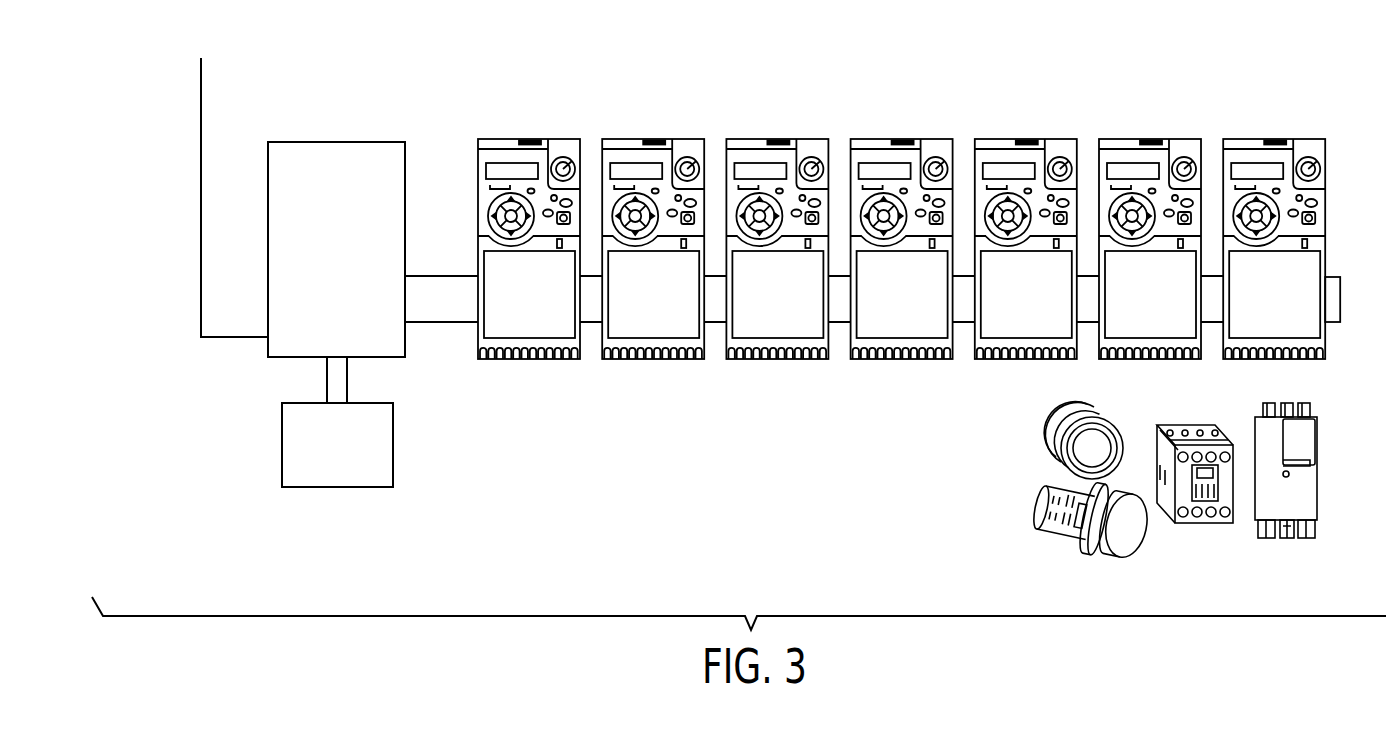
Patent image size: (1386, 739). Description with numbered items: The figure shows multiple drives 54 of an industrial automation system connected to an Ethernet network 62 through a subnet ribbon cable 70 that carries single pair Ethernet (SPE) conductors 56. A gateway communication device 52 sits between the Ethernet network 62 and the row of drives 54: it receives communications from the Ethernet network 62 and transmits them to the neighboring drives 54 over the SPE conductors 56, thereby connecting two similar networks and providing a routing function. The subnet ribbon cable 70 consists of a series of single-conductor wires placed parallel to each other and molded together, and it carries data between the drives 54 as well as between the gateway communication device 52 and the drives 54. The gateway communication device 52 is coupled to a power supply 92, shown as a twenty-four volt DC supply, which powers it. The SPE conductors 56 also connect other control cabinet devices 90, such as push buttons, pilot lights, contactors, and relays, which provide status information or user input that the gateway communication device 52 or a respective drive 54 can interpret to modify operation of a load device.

The gateway communication device 52 is at (337, 142).
The drives 54 is at (1338, 133).
The single pair Ethernet (SPE) conductors 56 is at (456, 310).
The Ethernet network 62 is at (201, 131).
The subnet ribbon cable 70 is at (453, 357).
The other control cabinet devices 90 is at (1323, 556).
The power supply 92 is at (335, 487).